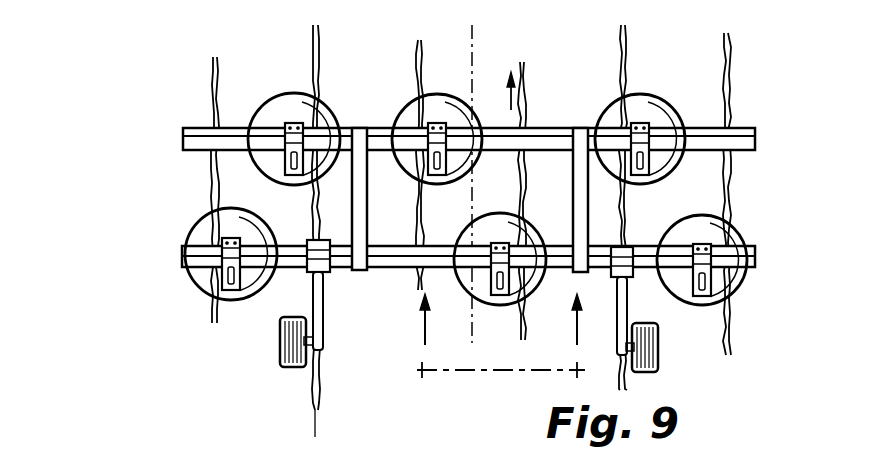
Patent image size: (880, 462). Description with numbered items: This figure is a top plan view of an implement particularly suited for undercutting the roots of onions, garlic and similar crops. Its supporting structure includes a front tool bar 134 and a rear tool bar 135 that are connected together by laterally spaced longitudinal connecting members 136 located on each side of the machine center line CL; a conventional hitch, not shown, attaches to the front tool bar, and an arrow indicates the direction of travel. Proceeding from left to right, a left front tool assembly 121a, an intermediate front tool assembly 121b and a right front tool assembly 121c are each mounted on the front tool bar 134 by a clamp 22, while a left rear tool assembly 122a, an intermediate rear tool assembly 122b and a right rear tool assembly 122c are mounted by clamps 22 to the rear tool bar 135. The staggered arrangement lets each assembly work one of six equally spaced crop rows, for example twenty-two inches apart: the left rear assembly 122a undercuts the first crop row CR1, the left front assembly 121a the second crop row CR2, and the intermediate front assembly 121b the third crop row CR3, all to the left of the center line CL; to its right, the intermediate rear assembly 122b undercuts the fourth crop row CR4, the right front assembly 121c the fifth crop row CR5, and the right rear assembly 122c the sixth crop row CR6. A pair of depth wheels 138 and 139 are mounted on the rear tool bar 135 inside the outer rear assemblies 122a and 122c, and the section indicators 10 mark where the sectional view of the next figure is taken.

The clamp 22 is at (295, 126).
The left front tool assembly 121a is at (292, 102).
The intermediate front tool assembly 121b is at (447, 100).
The right front tool assembly 121c is at (630, 107).
The left rear tool assembly 122a is at (218, 301).
The intermediate rear tool assembly 122b is at (498, 310).
The right rear tool assembly 122c is at (710, 227).
The front tool bar 134 is at (752, 143).
The rear tool bar 135 is at (747, 260).
The longitudinal connecting member 136 is at (581, 207).
The depth wheel 138 is at (280, 343).
The depth wheel 139 is at (655, 360).
The section line 10- 10 is at (505, 335).
The first crop row CR1 is at (215, 97).
The second crop row CR2 is at (320, 97).
The third crop row CR3 is at (420, 89).
The fourth crop row CR4 is at (530, 80).
The fifth crop row CR5 is at (623, 63).
The sixth crop row CR6 is at (731, 90).
The machine center line CL is at (473, 58).